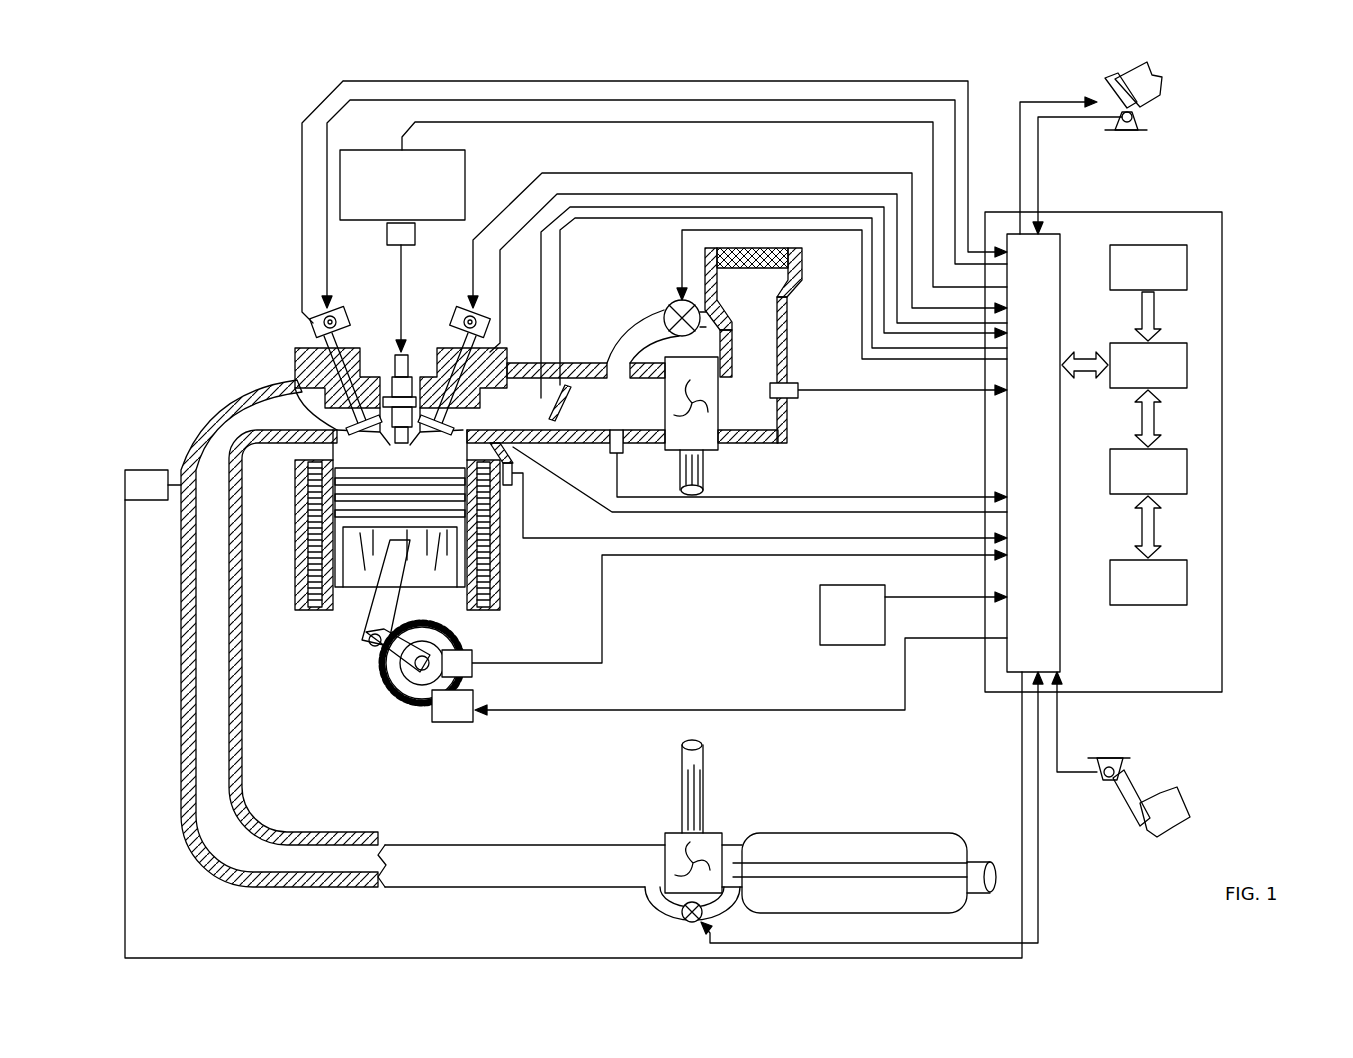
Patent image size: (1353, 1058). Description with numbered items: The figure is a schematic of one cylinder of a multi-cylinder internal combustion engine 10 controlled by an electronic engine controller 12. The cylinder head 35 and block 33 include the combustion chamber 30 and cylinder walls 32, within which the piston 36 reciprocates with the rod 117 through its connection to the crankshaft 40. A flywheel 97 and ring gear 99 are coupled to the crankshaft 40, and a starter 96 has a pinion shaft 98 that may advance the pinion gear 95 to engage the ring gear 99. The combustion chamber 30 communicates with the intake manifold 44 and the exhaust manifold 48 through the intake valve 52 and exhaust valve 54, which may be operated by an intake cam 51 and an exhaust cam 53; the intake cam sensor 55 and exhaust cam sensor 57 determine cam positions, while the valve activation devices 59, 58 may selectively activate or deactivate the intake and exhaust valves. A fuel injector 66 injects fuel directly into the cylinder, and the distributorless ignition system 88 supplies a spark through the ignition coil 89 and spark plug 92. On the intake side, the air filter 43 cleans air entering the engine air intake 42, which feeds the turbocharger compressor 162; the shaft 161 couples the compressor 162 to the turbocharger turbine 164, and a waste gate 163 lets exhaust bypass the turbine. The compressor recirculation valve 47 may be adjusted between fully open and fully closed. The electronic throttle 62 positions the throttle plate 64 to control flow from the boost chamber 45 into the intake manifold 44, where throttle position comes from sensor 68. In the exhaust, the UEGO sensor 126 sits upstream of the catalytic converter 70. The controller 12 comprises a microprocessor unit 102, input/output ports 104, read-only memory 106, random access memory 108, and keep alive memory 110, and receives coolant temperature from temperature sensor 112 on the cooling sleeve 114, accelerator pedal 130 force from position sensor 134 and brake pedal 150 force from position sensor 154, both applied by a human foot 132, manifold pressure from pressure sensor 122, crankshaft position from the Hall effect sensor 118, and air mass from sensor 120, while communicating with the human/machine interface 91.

The internal combustion engine 10 is at (218, 291).
The electronic engine controller 12 is at (1232, 213).
The combustion chamber 30 is at (297, 565).
The cylinder walls 32 is at (343, 617).
The block 33 is at (294, 502).
The cylinder head 35 is at (289, 349).
The piston 36 is at (368, 628).
The crankshaft 40 is at (400, 700).
The engine air intake 42 is at (628, 266).
The air filter 43 is at (762, 268).
The intake manifold 44 is at (586, 392).
The boost chamber 45 is at (622, 421).
The compressor recirculation valve 47 is at (668, 306).
The exhaust manifold 48 is at (423, 633).
The intake cam 51 is at (467, 312).
The intake valve 52 is at (450, 420).
The exhaust cam 53 is at (333, 312).
The exhaust valve 54 is at (330, 408).
The intake cam sensor 55 is at (486, 333).
The exhaust cam sensor 57 is at (316, 322).
The valve activation device 58 is at (338, 328).
The valve activation device 59 is at (462, 330).
The electronic throttle 62 is at (569, 401).
The throttle plate 64 is at (566, 414).
The fuel injector 66 is at (512, 478).
The throttle position sensor 68 is at (507, 360).
The catalytic converter 70 is at (790, 836).
The distributorless ignition system 88 is at (355, 150).
The ignition coil 89 is at (412, 235).
The human/machine interface 91 is at (852, 615).
The spark plug 92 is at (412, 372).
The pinion gear 95 is at (462, 728).
The starter 96 is at (473, 720).
The flywheel 97 is at (395, 660).
The pinion shaft 98 is at (448, 722).
The ring gear 99 is at (415, 715).
The microprocessor unit 102 is at (1190, 366).
The input/output ports 104 is at (1063, 246).
The read-only memory 106 is at (1190, 270).
The random access memory 108 is at (1190, 470).
The keep alive memory 110 is at (1190, 580).
The temperature sensor 112 is at (527, 483).
The cooling sleeve 114 is at (500, 578).
The rod 117 is at (408, 616).
The Hall effect sensor 118 is at (472, 656).
The air mass sensor 120 is at (790, 386).
The pressure sensor 122 is at (608, 446).
The Universal Exhaust Gas Oxygen (UEGO) sensor 126 is at (124, 478).
The accelerator pedal 130 is at (1097, 95).
The human foot 132 is at (1153, 80).
The position sensor 134 is at (1140, 118).
The brake pedal 150 is at (1135, 822).
The position sensor 154 is at (1100, 768).
The shaft 161 is at (678, 470).
The turbocharger compressor 162 is at (705, 435).
The waste gate 163 is at (685, 921).
The turbocharger turbine 164 is at (672, 833).